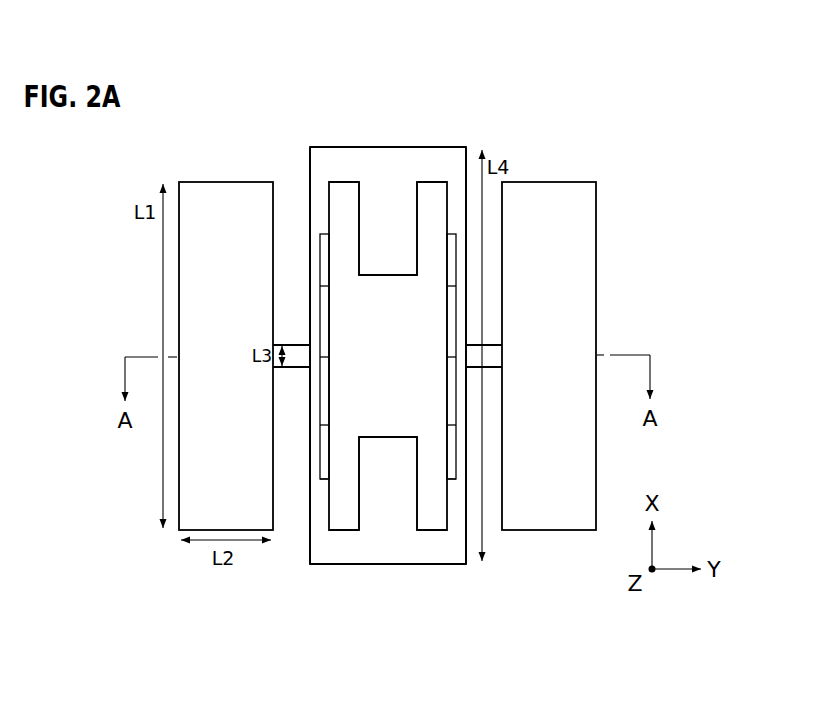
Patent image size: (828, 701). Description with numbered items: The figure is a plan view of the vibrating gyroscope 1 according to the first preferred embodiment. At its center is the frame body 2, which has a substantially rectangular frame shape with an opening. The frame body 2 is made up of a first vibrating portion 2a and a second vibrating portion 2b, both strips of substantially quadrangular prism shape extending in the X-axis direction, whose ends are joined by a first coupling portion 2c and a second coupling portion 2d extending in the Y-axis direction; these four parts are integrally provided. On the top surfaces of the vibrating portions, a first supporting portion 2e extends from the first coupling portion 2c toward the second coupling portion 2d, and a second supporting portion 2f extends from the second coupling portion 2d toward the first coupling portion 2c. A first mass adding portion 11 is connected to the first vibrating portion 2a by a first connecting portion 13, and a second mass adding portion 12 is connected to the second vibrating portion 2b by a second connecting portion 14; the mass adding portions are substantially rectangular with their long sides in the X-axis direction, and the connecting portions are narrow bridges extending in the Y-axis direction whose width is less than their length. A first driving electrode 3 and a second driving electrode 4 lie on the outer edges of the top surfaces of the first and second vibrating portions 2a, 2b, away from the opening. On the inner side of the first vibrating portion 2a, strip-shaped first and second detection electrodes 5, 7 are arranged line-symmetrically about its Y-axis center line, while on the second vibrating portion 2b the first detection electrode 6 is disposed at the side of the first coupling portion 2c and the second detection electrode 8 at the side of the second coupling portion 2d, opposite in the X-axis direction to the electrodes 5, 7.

The vibrating gyroscope 1 is at (224, 92).
The frame body 2 is at (308, 145).
The first vibrating portion 2a is at (318, 200).
The second vibrating portion 2b is at (457, 512).
The first coupling portion 2c is at (443, 155).
The second coupling portion 2d is at (437, 548).
The first supporting portion 2e is at (390, 276).
The second supporting portion 2f is at (385, 436).
The first driving electrode 3 is at (314, 315).
The second driving electrode 4 is at (463, 323).
The first detection electrode 5 is at (323, 478).
The first detection electrode 6 is at (457, 244).
The second detection electrode 7 is at (325, 242).
The second detection electrode 8 is at (450, 480).
The first mass adding portion 11 is at (178, 532).
The second mass adding portion 12 is at (597, 490).
The first connecting portion 13 is at (290, 368).
The second connecting portion 14 is at (492, 370).